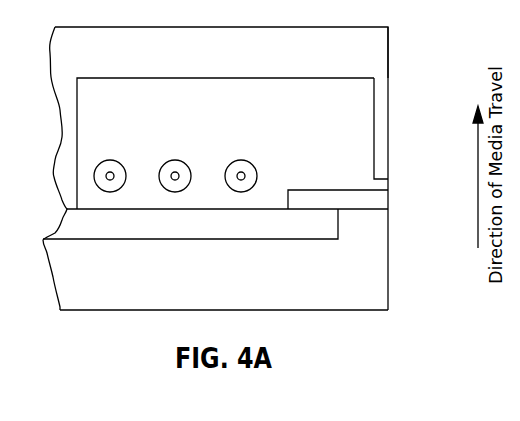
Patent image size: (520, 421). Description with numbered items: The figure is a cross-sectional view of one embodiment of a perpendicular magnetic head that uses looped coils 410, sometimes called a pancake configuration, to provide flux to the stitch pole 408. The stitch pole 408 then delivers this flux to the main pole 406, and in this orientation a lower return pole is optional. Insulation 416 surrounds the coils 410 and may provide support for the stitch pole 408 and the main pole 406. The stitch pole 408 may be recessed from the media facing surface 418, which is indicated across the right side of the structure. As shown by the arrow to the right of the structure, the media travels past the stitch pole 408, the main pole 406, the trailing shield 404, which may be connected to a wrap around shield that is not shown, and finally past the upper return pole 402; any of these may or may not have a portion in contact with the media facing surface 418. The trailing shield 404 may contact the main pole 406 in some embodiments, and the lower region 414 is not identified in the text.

The upper return pole 402 is at (300, 61).
The trailing shield 404 is at (388, 110).
The main pole 406 is at (388, 190).
The stitch pole 408 is at (247, 235).
The looped coils 410 is at (108, 160).
The lower guide / base 414 is at (247, 281).
The insulation 416 is at (337, 150).
The media facing surface 418 is at (390, 43).